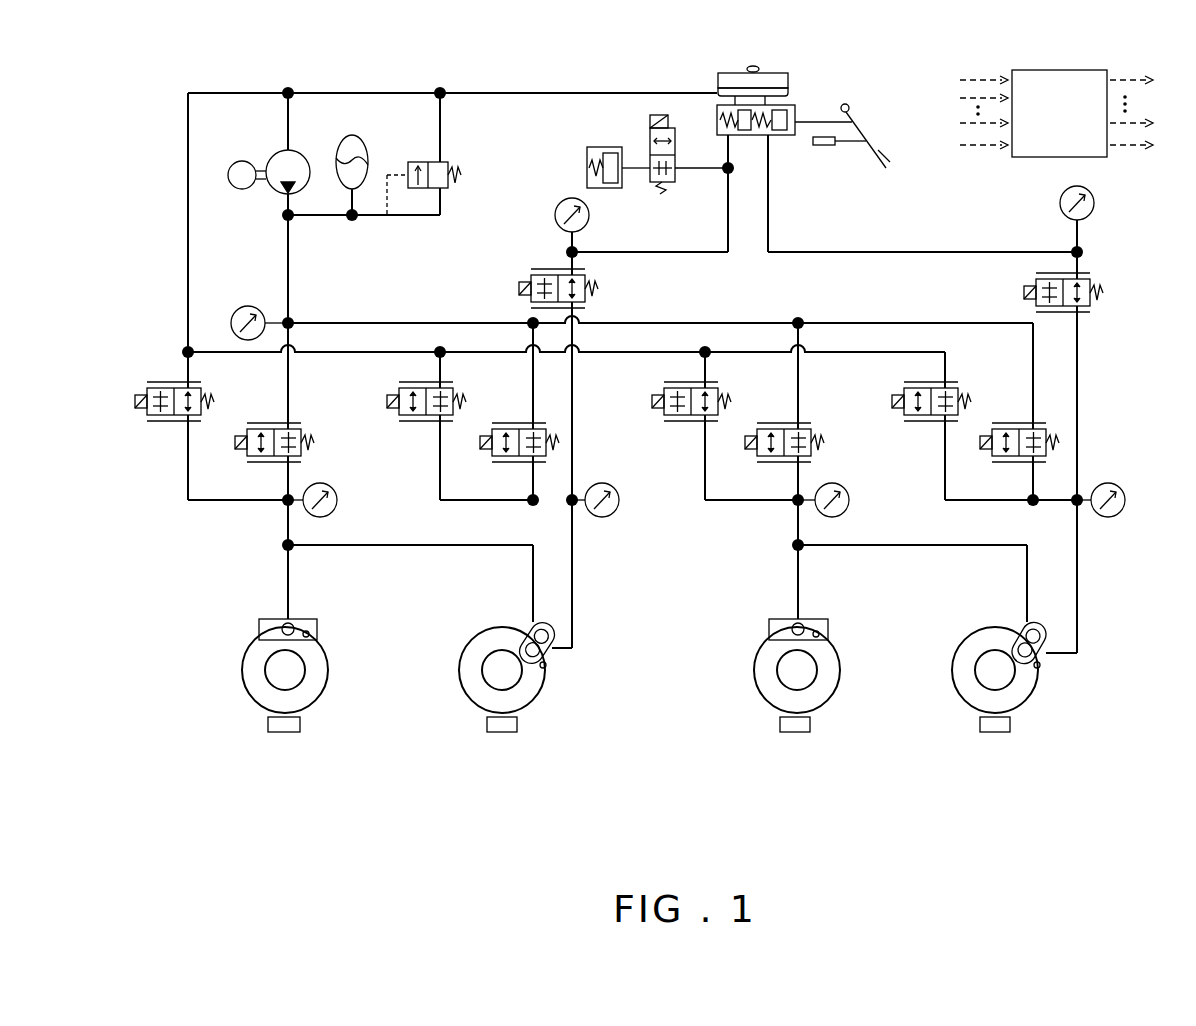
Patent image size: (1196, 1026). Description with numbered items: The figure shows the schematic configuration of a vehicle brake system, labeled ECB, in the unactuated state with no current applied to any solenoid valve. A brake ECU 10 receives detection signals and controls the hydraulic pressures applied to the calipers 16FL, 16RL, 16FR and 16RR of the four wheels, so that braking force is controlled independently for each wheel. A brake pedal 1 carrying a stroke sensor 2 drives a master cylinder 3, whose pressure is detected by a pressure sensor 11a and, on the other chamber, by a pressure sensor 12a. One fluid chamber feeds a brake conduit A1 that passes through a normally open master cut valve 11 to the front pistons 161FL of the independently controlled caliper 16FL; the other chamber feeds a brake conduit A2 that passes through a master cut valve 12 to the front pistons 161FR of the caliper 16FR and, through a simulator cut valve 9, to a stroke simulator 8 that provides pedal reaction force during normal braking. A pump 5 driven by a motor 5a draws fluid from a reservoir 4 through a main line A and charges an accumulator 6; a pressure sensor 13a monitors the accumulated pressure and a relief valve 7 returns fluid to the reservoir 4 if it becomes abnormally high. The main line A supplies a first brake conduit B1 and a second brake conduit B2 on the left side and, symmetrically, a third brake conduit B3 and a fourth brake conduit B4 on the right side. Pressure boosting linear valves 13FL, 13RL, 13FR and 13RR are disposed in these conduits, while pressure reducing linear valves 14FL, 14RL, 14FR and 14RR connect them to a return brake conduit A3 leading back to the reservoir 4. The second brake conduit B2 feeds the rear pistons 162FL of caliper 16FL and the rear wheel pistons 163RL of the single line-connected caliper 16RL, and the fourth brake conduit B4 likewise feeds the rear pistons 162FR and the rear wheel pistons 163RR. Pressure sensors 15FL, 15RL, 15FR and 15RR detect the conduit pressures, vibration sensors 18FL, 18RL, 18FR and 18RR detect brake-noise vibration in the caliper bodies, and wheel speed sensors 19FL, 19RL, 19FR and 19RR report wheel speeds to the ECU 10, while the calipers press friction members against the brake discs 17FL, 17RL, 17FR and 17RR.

The brake pedal 1 is at (878, 165).
The stroke sensor 2 is at (828, 146).
The master cylinder 3 is at (796, 104).
The reservoir 4 is at (716, 82).
The pump 5 is at (283, 151).
The motor 5a is at (236, 166).
The accumulator 6 is at (338, 158).
The relief valve 7 is at (418, 161).
The stroke simulator 8 is at (598, 147).
The simulator cut valve 9 is at (670, 130).
The brake ECU 10 is at (1060, 70).
The master cut valve 11 is at (1094, 282).
The pressure sensor 11a is at (1094, 199).
The master cut valve 12 is at (600, 283).
The pressure sensor 12a is at (555, 217).
The pressure sensor 13a is at (252, 308).
The second pressure boosting linear valve 13RR is at (282, 458).
The first pressure boosting linear valve 13FR is at (525, 460).
The second pressure boosting linear valve 13RL is at (792, 458).
The first pressure boosting linear valve 13FL is at (1028, 458).
The second pressure reducing linear valve 14RR is at (172, 420).
The first pressure reducing linear valve 14FR is at (420, 420).
The second pressure reducing linear valve 14RL is at (688, 420).
The first pressure reducing linear valve 14FL is at (928, 420).
The pressure sensor 15RR is at (337, 500).
The pressure sensor 15FR is at (619, 500).
The pressure sensor 15RL is at (849, 500).
The pressure sensor 15FL is at (1125, 490).
The single line-connected caliper 16RR is at (266, 618).
The independently controlled caliper 16FR is at (520, 626).
The single line-connected caliper 16RL is at (774, 618).
The independently controlled caliper 16FL is at (1016, 626).
The front pistons 161FR is at (552, 658).
The front pistons 161FL is at (1046, 658).
The rear pistons 162FR is at (530, 622).
The rear pistons 162FL is at (1022, 622).
The rear wheel pistons 163RR is at (258, 625).
The rear wheel pistons 163RL is at (768, 626).
The brake disc 17RR is at (244, 680).
The brake disc 17FR is at (460, 680).
The brake disc 17RL is at (756, 680).
The brake disc 17FL is at (953, 680).
The vibration sensor 18RR is at (312, 634).
The vibration sensor 18FR is at (546, 670).
The vibration sensor 18RL is at (822, 634).
The vibration sensor 18FL is at (1040, 670).
The wheel speed sensor 19RR is at (268, 730).
The wheel speed sensor 19FR is at (487, 730).
The wheel speed sensor 19RL is at (780, 730).
The wheel speed sensor 19FL is at (980, 730).
The main line A is at (498, 92).
The brake conduit A1 is at (768, 228).
The brake conduit A2 is at (727, 228).
The return brake conduit A3 is at (187, 226).
The first brake conduit B1 is at (1035, 358).
The second brake conduit B2 is at (803, 356).
The third brake conduit B3 is at (573, 600).
The fourth brake conduit B4 is at (378, 548).
The electronically controlled brake system ECB is at (408, 88).